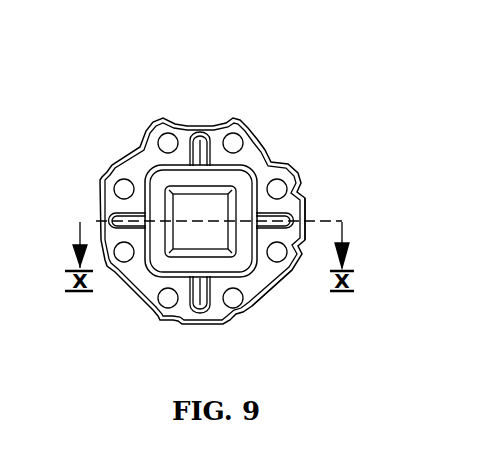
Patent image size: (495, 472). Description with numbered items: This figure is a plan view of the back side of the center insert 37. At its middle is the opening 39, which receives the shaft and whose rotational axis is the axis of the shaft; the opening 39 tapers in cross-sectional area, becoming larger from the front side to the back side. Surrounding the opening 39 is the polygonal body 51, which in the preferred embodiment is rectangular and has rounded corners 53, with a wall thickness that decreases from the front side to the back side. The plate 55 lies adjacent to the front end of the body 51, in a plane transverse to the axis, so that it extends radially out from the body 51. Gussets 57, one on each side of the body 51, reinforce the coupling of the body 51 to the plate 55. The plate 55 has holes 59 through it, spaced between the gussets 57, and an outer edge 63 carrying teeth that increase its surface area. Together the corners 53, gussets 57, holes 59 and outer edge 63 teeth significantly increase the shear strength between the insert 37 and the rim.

The center insert 37 is at (278, 140).
The opening 39 is at (207, 189).
The polygonal body 51 is at (229, 164).
The rounded corners 53 is at (254, 173).
The plate 55 is at (183, 309).
The gussets 57 is at (124, 226).
The holes 59 is at (164, 135).
The outer edge 63 is at (309, 246).